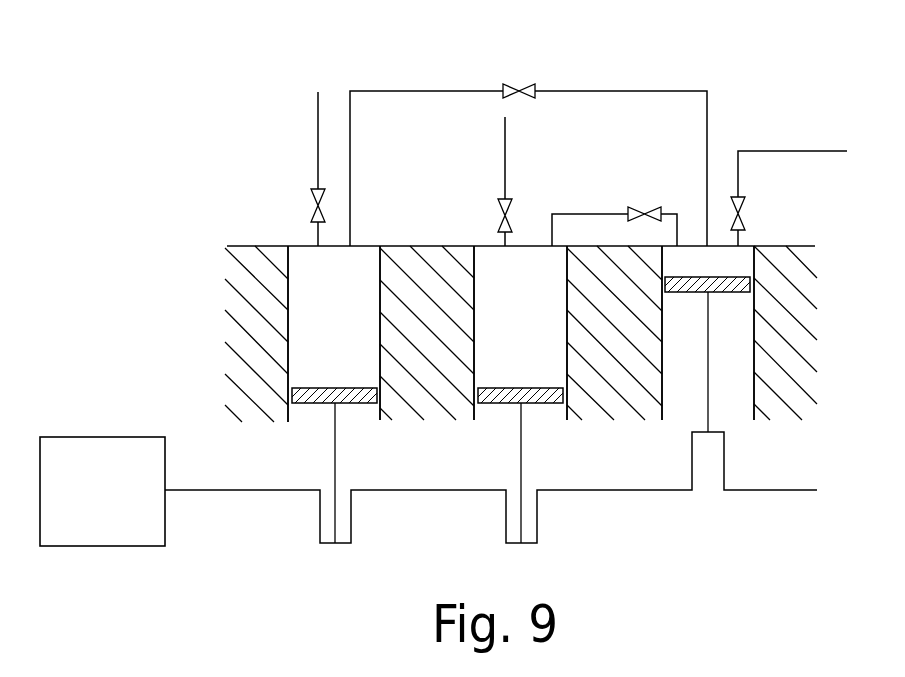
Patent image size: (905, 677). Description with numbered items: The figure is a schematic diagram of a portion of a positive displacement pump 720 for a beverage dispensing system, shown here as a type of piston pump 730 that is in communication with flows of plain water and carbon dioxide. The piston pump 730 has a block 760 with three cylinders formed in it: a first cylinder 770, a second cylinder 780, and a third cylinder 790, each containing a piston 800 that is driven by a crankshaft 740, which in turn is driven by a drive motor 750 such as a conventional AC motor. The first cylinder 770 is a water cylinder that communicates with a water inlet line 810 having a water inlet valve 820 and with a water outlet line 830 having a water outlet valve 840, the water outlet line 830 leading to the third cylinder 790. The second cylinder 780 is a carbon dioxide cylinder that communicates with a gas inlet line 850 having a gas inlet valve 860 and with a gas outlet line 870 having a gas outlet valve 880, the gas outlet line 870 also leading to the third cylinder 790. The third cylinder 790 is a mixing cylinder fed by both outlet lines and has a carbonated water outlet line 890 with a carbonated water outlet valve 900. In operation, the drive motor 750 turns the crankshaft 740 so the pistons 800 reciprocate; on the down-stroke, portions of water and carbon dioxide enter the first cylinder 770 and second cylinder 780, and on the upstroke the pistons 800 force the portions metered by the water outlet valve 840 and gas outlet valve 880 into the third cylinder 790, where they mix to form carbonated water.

The positive displacement pump 720 is at (165, 125).
The piston pump 730 is at (233, 247).
The crankshaft 740 is at (232, 491).
The drive motor 750 is at (102, 491).
The block 760 is at (228, 380).
The first cylinder 770 is at (334, 334).
The second cylinder 780 is at (520, 333).
The third cylinder 790 is at (708, 333).
The piston 800 is at (362, 403).
The water inlet line 810 is at (317, 127).
The water inlet valve 820 is at (312, 195).
The water outlet line 830 is at (351, 165).
The water outlet valve 840 is at (528, 83).
The gas inlet line 850 is at (505, 148).
The gas inlet valve 860 is at (503, 212).
The gas outlet line 870 is at (582, 213).
The gas outlet valve 880 is at (655, 208).
The carbonated water outlet line 890 is at (798, 150).
The carbonated water outlet valve 900 is at (744, 207).